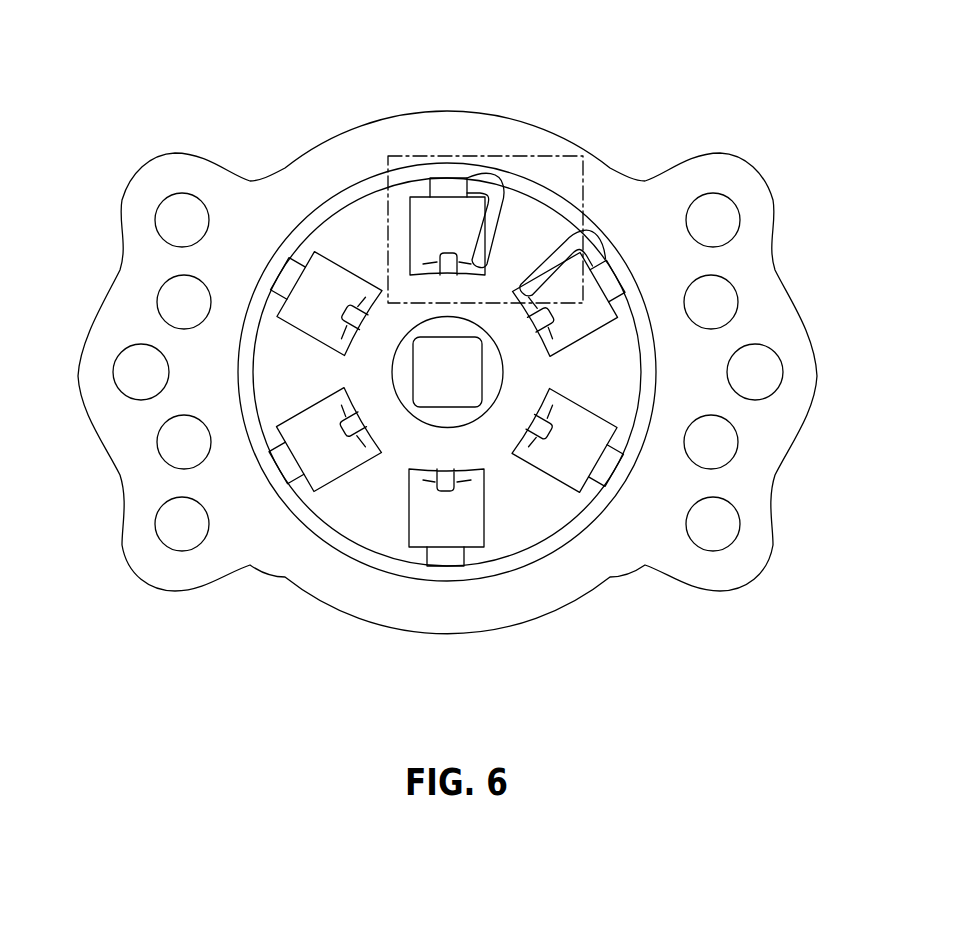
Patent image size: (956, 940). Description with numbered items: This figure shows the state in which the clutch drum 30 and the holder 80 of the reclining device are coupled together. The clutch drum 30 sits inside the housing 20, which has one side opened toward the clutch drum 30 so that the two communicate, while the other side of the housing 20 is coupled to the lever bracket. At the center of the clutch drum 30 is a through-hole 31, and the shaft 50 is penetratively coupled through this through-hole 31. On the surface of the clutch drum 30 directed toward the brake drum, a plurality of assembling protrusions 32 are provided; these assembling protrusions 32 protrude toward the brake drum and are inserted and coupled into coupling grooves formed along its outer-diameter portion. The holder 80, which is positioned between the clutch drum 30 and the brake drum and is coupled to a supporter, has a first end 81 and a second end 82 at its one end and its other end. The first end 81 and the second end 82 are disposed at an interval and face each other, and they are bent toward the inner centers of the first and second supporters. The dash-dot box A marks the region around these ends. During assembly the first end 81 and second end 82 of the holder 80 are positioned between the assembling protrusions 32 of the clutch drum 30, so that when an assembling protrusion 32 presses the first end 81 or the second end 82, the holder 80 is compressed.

The housing 20 is at (330, 128).
The clutch drum 30 is at (626, 388).
The through-hole 31 is at (443, 413).
The assembling protrusions 32 is at (449, 182).
The shaft 50 is at (472, 404).
The holder 80 is at (317, 198).
The first end 81 is at (552, 254).
The second end 82 is at (492, 224).
The enlarged region A is at (510, 155).